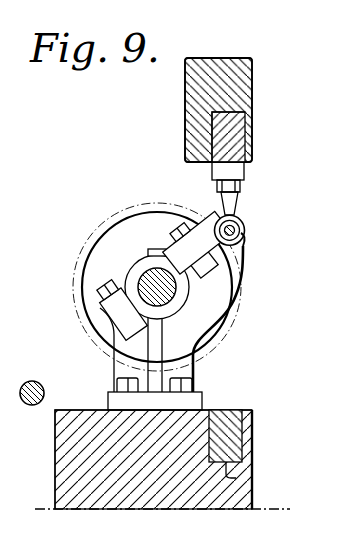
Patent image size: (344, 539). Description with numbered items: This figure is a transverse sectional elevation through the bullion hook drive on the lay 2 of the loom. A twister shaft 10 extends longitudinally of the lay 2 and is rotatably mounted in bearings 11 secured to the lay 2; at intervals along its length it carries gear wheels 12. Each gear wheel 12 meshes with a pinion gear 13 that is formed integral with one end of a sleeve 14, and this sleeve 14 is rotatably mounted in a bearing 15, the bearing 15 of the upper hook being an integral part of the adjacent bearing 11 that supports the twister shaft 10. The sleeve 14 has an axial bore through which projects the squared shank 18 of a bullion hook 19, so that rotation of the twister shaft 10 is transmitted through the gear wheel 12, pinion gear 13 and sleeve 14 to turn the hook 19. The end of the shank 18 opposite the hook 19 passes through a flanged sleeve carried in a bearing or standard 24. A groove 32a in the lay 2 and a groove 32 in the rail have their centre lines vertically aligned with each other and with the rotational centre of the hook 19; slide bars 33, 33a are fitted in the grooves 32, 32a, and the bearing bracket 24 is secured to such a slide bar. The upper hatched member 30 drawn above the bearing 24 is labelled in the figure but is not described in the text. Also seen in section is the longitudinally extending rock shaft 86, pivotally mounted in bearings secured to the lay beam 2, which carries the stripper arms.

The lay 2 is at (65, 436).
The twister shaft 10 is at (150, 277).
The bearing 11 is at (180, 330).
The gear wheel 12 is at (81, 260).
The pinion gear 13 is at (247, 244).
The sleeve 14 is at (222, 222).
The bearing 15 is at (224, 200).
The squared shank 18 is at (245, 232).
The bullion hook 19 is at (244, 223).
The bearing bracket 24 is at (237, 203).
The tool holder 30 is at (244, 71).
The groove 32 is at (235, 113).
The slide bar 33 is at (233, 147).
The groove 32a is at (236, 478).
The slide bar 33a is at (228, 433).
The rock shaft 86 is at (42, 388).